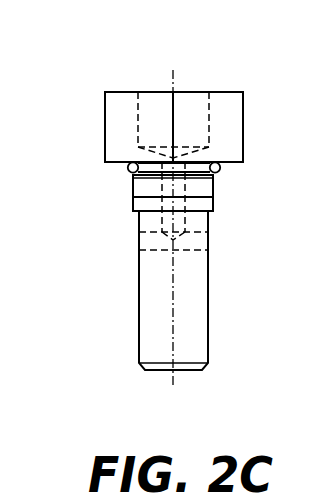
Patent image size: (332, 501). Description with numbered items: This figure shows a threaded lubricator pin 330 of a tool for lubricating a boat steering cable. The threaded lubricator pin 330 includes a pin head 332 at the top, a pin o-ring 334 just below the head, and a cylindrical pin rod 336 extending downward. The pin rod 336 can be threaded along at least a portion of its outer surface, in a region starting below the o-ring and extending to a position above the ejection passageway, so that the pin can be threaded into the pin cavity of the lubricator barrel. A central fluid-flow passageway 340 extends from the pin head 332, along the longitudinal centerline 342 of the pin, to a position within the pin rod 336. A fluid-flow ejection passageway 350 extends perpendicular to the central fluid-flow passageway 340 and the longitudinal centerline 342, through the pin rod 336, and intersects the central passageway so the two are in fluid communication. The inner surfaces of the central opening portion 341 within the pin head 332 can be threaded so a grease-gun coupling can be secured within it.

The threaded lubricator pin 330 is at (96, 55).
The pin head 332 is at (237, 103).
The pin o-ring 334 is at (226, 184).
The cylindrical pin rod 336 is at (195, 313).
The central fluid-flow passageway 340 is at (190, 81).
The central opening portion 341 is at (103, 94).
The longitudinal centerline 342 is at (186, 399).
The fluid-flow ejection passageway 350 is at (216, 258).